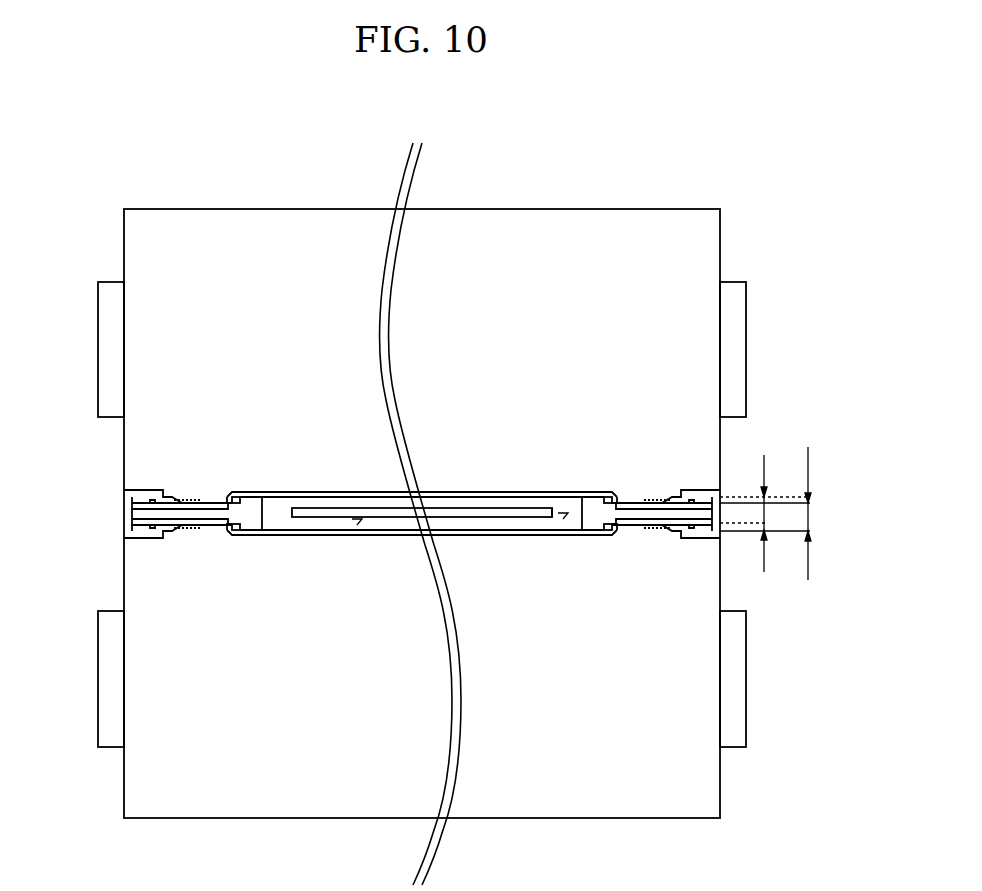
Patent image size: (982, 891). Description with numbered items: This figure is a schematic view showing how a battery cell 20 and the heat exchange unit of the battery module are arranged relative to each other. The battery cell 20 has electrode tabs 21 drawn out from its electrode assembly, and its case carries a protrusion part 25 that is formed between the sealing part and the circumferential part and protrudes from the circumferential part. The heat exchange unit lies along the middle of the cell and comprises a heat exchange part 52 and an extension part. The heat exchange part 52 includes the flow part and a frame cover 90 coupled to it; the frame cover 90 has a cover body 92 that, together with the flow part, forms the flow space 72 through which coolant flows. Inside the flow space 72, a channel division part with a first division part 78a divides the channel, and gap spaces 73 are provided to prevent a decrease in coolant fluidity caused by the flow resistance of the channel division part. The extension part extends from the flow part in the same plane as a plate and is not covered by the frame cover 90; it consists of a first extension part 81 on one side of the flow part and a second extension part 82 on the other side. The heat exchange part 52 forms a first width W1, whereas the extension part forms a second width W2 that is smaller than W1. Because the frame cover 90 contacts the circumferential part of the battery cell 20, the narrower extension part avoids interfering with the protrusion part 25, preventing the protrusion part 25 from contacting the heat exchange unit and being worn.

The battery cell 20 is at (212, 225).
The electrode tabs 21 is at (107, 342).
The protrusion part 25 is at (198, 497).
The heat exchange part 52 is at (296, 547).
The flow space 72 is at (357, 522).
The gap spaces 73 is at (563, 515).
The first division part 78a is at (505, 518).
The first extension part 81 is at (167, 528).
The second extension part 82 is at (668, 520).
The frame cover 90 is at (308, 485).
The cover body 92 is at (518, 492).
The first width W1 is at (786, 513).
The second width W2 is at (765, 513).